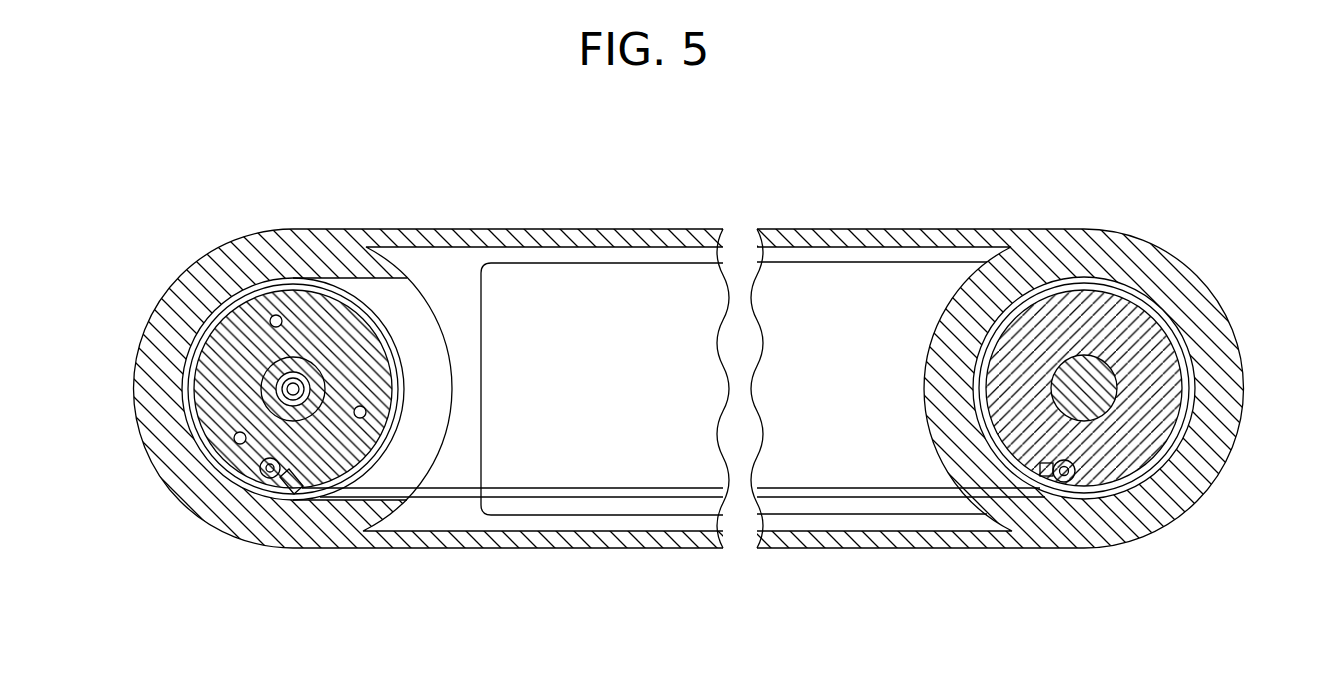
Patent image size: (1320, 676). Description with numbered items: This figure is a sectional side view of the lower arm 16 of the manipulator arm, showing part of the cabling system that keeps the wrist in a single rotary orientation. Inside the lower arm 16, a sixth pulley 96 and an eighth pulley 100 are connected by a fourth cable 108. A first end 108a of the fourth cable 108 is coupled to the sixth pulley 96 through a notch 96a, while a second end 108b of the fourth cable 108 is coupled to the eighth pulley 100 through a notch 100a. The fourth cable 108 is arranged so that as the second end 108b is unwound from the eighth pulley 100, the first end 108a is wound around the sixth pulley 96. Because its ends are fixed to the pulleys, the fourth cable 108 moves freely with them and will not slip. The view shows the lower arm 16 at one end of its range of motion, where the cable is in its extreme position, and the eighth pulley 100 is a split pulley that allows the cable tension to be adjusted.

The lower arm 16 is at (783, 228).
The sixth pulley 96 is at (1152, 351).
The notch 96a is at (1068, 469).
The eighth pulley 100 is at (218, 351).
The notch 100a is at (257, 462).
The fourth cable 108 is at (885, 497).
The first end 108a is at (1063, 477).
The second end 108b is at (266, 472).